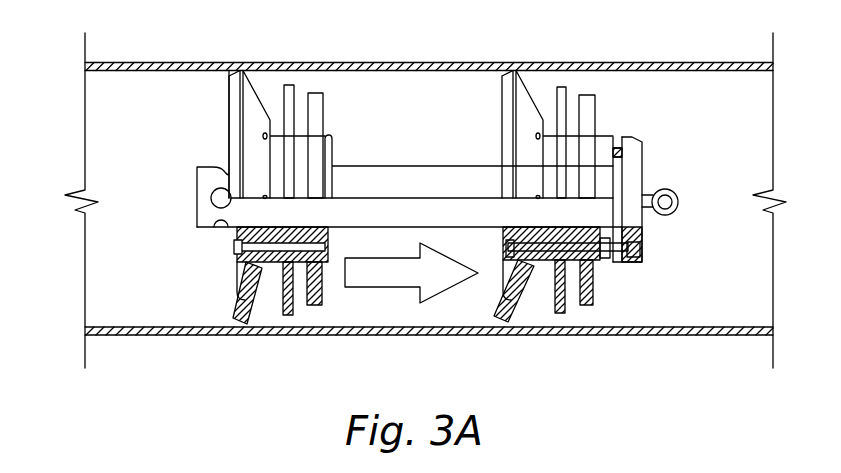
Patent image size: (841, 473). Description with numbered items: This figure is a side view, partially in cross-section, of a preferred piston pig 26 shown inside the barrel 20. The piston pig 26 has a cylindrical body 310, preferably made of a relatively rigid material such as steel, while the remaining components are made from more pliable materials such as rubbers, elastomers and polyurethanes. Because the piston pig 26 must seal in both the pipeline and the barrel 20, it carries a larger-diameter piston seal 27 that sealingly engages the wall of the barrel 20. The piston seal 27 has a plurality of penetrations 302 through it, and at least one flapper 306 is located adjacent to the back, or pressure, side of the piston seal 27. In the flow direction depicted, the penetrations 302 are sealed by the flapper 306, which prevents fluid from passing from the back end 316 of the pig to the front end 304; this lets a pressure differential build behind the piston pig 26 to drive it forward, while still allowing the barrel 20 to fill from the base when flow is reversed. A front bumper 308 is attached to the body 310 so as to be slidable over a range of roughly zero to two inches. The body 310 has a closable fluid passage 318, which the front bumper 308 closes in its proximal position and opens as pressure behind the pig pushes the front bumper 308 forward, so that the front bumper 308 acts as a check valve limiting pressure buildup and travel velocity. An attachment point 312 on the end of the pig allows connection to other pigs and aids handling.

The barrel 20 is at (365, 62).
The piston pig 26 is at (428, 108).
The piston seal 27 is at (525, 92).
The penetrations 302 is at (258, 318).
The front end 304 is at (640, 233).
The flapper 306 is at (237, 278).
The front bumper 308 is at (642, 163).
The cylindrical body 310 is at (200, 230).
The attachment point 312 is at (197, 176).
The back end 316 is at (293, 318).
The fluid passage 318 is at (616, 137).